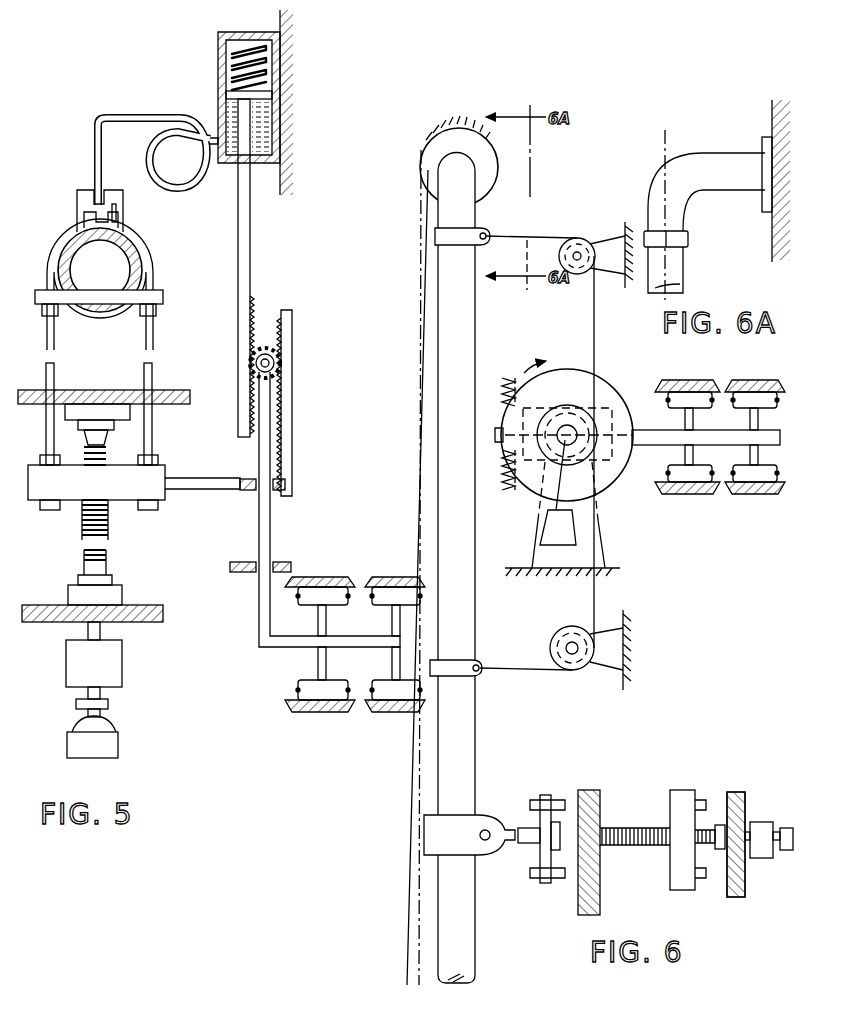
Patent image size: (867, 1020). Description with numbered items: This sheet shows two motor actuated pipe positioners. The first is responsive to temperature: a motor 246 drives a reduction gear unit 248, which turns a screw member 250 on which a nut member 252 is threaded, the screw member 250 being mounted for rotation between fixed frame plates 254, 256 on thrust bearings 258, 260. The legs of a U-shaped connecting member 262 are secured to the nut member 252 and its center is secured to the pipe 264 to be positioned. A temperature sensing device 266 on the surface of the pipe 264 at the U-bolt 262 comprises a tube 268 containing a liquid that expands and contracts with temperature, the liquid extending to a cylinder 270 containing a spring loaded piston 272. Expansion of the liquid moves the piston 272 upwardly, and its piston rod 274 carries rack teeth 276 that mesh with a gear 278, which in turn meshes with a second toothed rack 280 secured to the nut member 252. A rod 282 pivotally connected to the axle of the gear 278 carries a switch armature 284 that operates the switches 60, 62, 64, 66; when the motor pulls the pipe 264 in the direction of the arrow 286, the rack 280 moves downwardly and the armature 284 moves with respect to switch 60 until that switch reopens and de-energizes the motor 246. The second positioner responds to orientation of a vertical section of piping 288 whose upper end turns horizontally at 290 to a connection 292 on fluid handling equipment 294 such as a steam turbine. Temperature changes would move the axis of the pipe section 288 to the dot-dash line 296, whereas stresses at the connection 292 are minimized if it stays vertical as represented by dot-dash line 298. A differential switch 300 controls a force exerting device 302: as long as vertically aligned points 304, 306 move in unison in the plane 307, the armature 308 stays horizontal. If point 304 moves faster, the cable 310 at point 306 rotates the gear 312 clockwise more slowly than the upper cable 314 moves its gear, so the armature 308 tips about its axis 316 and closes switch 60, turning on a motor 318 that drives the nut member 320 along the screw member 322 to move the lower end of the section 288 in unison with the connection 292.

In FIG. 5, the motor 246 is at (110, 746).
In FIG. 5, the reduction gear unit 248 is at (112, 662).
In FIG. 5, the screw member 250 is at (108, 560).
In FIG. 5, the nut member 252 is at (42, 500).
In FIG. 5, the fixed frame plate 254 is at (140, 614).
In FIG. 5, the fixed frame plate 256 is at (172, 406).
In FIG. 5, the thrust bearing 258 is at (68, 596).
In FIG. 5, the thrust bearing 260 is at (100, 404).
In FIG. 5, the U-shaped connecting member 262 is at (56, 338).
In FIG. 5, the pipe 264 is at (76, 226).
In FIG. 5, the temperature sensing device 266 is at (118, 211).
In FIG. 5, the tube 268 is at (95, 147).
In FIG. 5, the cylinder 270 is at (218, 78).
In FIG. 5, the spring loaded piston 272 is at (266, 96).
In FIG. 5, the piston rod 274 is at (251, 264).
In FIG. 5, the teeth 276 is at (256, 308).
In FIG. 5, the gear 278 is at (270, 350).
In FIG. 5, the second toothed rack 280 is at (290, 377).
In FIG. 5, the rod 282 is at (264, 522).
In FIG. 5, the switch armature 284 is at (268, 644).
In FIG. 5, the arrow 286 is at (192, 300).
In FIG. 5, the switch 60 is at (320, 606).
In FIG. 6, the switch 60 is at (687, 405).
In FIG. 5, the switch 62 is at (320, 679).
In FIG. 6, the switch 62 is at (687, 469).
In FIG. 5, the switch 64 is at (395, 606).
In FIG. 6, the switch 64 is at (755, 405).
In FIG. 5, the switch 66 is at (395, 679).
In FIG. 6, the switch 66 is at (755, 469).
In FIG. 6, the vertical section of piping 288 is at (458, 747).
In FIG. 6A, the horizontally turned upper end 290 is at (714, 166).
In FIG. 6A, the connection 292 is at (760, 200).
In FIG. 6A, the fluid handling equipment 294 is at (772, 240).
In FIG. 6, the dot-dash line 296 is at (418, 526).
In FIG. 6, the dot-dash line 298 is at (416, 780).
In FIG. 6, the differential switch 300 is at (642, 522).
In FIG. 6, the force exerting device 302 is at (679, 786).
In FIG. 6, the point 304 is at (462, 240).
In FIG. 6, the point 306 is at (458, 668).
In FIG. 6A, the plane 307 is at (656, 216).
In FIG. 6, the armature 308 is at (648, 428).
In FIG. 6, the cable 310 is at (518, 668).
In FIG. 6, the gear 312 is at (532, 500).
In FIG. 6, the upper cable 314 is at (570, 238).
In FIG. 6, the axis 316 is at (562, 425).
In FIG. 6, the motor 318 is at (786, 828).
In FIG. 6, the nut member 320 is at (686, 890).
In FIG. 6, the screw member 322 is at (652, 848).